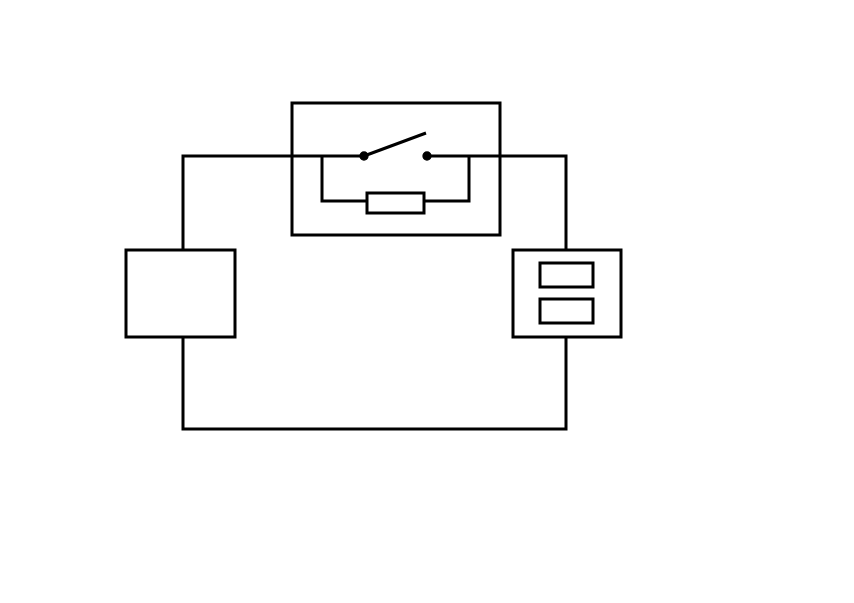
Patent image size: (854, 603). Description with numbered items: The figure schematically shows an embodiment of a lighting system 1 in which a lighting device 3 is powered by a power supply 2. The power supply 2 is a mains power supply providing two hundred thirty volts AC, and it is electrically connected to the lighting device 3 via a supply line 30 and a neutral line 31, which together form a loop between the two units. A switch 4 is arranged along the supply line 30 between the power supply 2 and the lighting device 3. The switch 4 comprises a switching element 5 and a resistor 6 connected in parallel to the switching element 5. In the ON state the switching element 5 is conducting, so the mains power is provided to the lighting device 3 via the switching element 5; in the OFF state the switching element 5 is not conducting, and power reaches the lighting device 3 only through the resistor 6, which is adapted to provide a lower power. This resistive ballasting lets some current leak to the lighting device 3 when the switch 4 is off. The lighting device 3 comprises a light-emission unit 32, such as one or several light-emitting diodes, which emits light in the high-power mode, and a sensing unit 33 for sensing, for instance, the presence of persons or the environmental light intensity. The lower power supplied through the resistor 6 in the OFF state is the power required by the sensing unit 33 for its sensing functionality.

The lighting system 1 is at (620, 77).
The power supply 2 is at (140, 338).
The lighting device 3 is at (621, 290).
The switch 4 is at (445, 103).
The switching element 5 is at (383, 136).
The resistor 6 is at (395, 214).
The supply line 30 is at (130, 188).
The neutral line 31 is at (162, 447).
The light-emission unit 32 is at (593, 272).
The sensing unit 33 is at (593, 310).